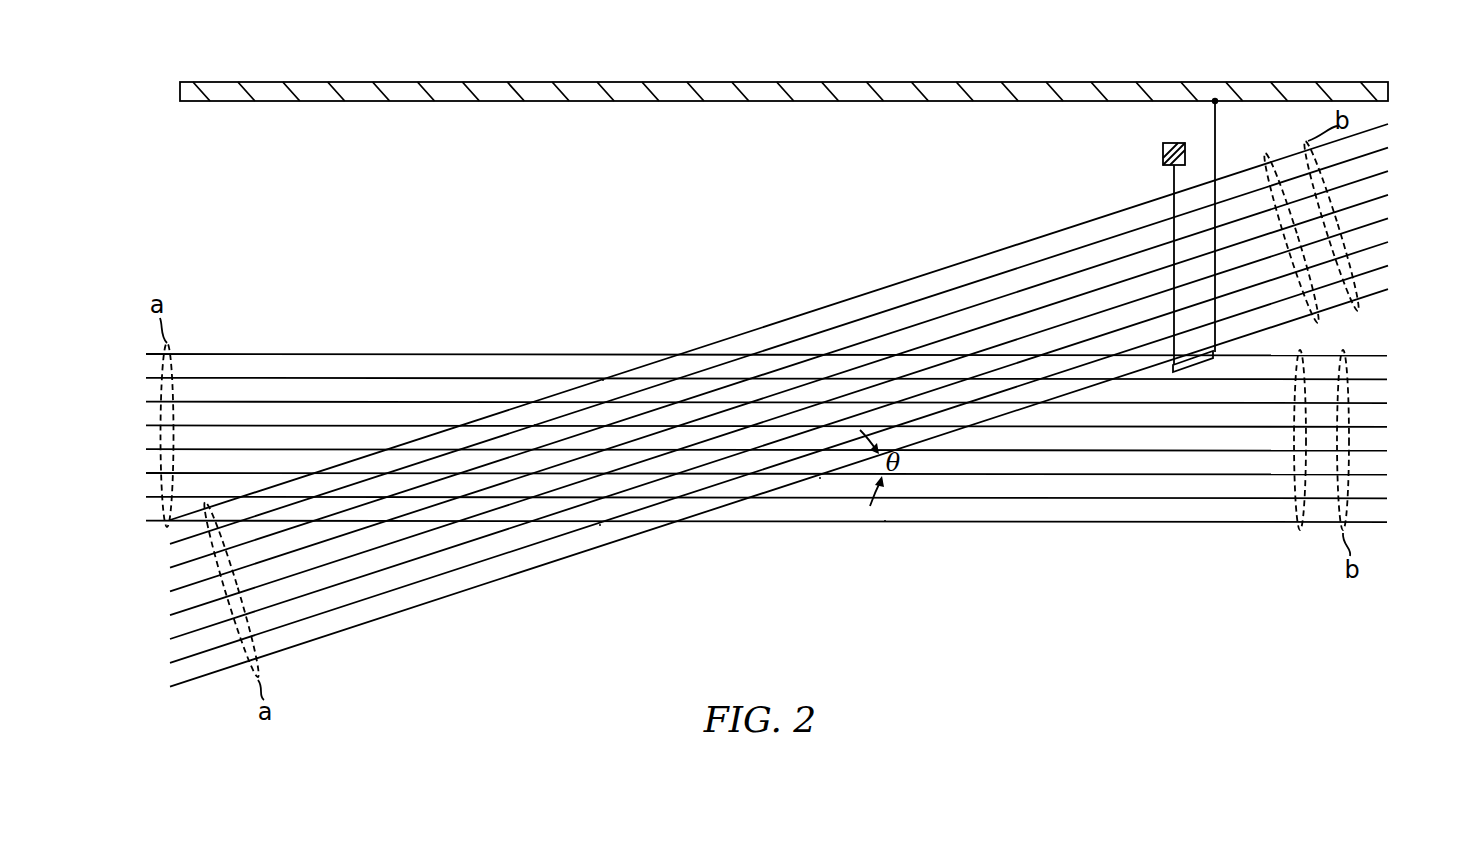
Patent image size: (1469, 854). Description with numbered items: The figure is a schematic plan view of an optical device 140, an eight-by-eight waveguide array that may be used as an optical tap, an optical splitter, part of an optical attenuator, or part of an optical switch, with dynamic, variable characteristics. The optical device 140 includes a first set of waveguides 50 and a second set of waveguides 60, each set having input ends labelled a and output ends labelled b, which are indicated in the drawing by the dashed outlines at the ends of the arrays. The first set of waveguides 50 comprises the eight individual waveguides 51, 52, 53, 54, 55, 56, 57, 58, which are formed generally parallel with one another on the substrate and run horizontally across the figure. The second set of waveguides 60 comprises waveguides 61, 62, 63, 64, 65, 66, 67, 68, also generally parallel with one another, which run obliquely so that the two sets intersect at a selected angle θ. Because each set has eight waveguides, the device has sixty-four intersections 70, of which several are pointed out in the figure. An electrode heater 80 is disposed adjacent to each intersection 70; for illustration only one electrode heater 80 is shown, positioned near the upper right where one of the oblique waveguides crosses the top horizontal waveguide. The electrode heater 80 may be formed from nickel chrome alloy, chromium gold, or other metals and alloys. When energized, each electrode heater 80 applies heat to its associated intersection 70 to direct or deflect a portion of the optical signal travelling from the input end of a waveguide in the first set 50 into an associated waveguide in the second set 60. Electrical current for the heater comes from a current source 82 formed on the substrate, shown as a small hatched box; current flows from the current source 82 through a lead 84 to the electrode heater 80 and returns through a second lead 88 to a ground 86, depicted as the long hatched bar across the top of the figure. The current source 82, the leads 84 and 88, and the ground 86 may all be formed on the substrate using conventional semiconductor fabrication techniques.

The first set of waveguides 50 is at (1302, 540).
The waveguide 51 is at (1373, 525).
The waveguide 52 is at (148, 496).
The waveguide 53 is at (1373, 477).
The waveguide 54 is at (148, 449).
The waveguide 55 is at (1373, 429).
The waveguide 56 is at (148, 401).
The waveguide 57 is at (1373, 382).
The waveguide 58 is at (148, 354).
The second set of waveguides 60 is at (1272, 143).
The waveguide 61 is at (186, 683).
The waveguide 62 is at (1378, 270).
The waveguide 63 is at (186, 635).
The waveguide 64 is at (1378, 222).
The waveguide 65 is at (186, 588).
The waveguide 66 is at (1378, 175).
The waveguide 67 is at (186, 540).
The waveguide 68 is at (1378, 128).
The intersection 70 is at (535, 425).
The electrode heater 80 is at (1230, 351).
The current source 82 is at (1162, 150).
The lead 84 is at (1172, 178).
The ground 86 is at (887, 82).
The lead 88 is at (1212, 130).
The optical device 140 is at (887, 542).